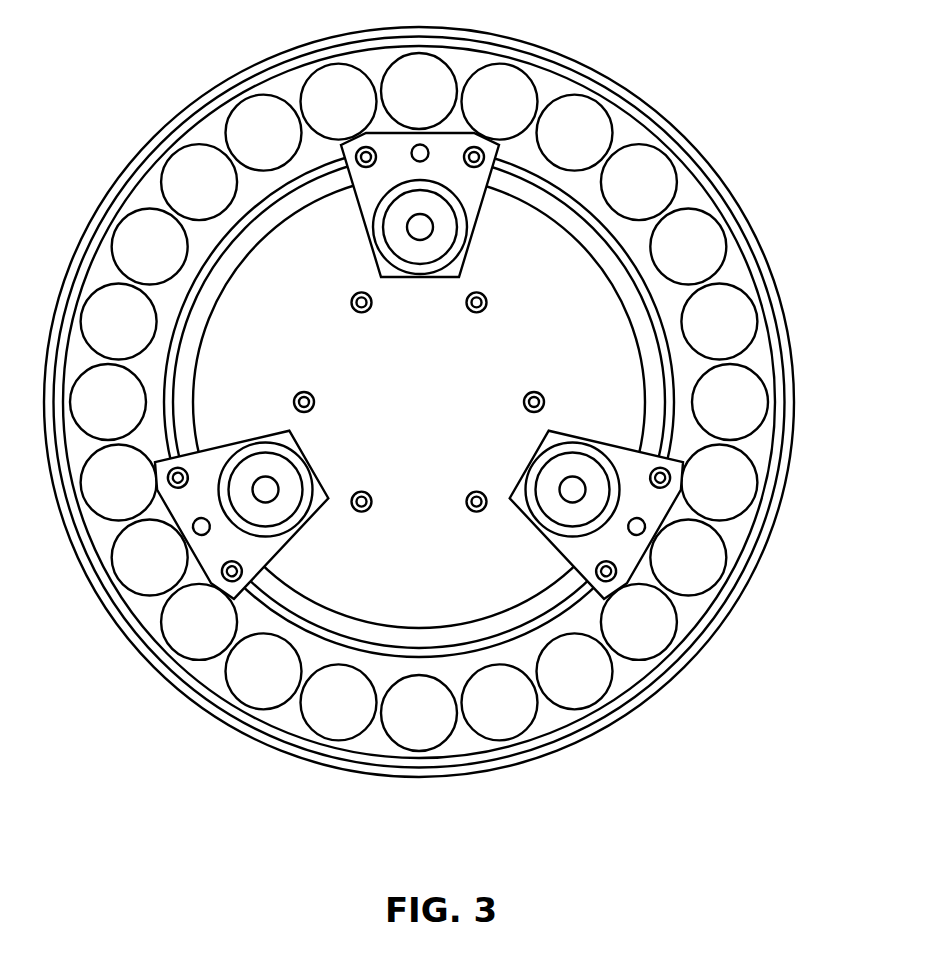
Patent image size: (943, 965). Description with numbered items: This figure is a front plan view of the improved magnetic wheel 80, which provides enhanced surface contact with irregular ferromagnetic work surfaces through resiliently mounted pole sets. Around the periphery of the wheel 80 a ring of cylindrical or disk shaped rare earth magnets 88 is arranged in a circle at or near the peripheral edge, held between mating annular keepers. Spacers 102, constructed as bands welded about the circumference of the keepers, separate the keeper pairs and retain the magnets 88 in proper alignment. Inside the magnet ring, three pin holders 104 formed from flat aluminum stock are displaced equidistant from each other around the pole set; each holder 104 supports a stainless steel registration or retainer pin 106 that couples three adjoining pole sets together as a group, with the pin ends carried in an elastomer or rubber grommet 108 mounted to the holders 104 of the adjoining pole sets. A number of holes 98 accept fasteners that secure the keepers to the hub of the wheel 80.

The magnetic wheel 80 is at (613, 77).
The rare earth magnets 88 is at (727, 313).
The holes 98 is at (469, 307).
The spacers 102 is at (177, 128).
The pin holders 104 is at (465, 183).
The retainer pin 106 is at (264, 489).
The grommet 108 is at (443, 220).